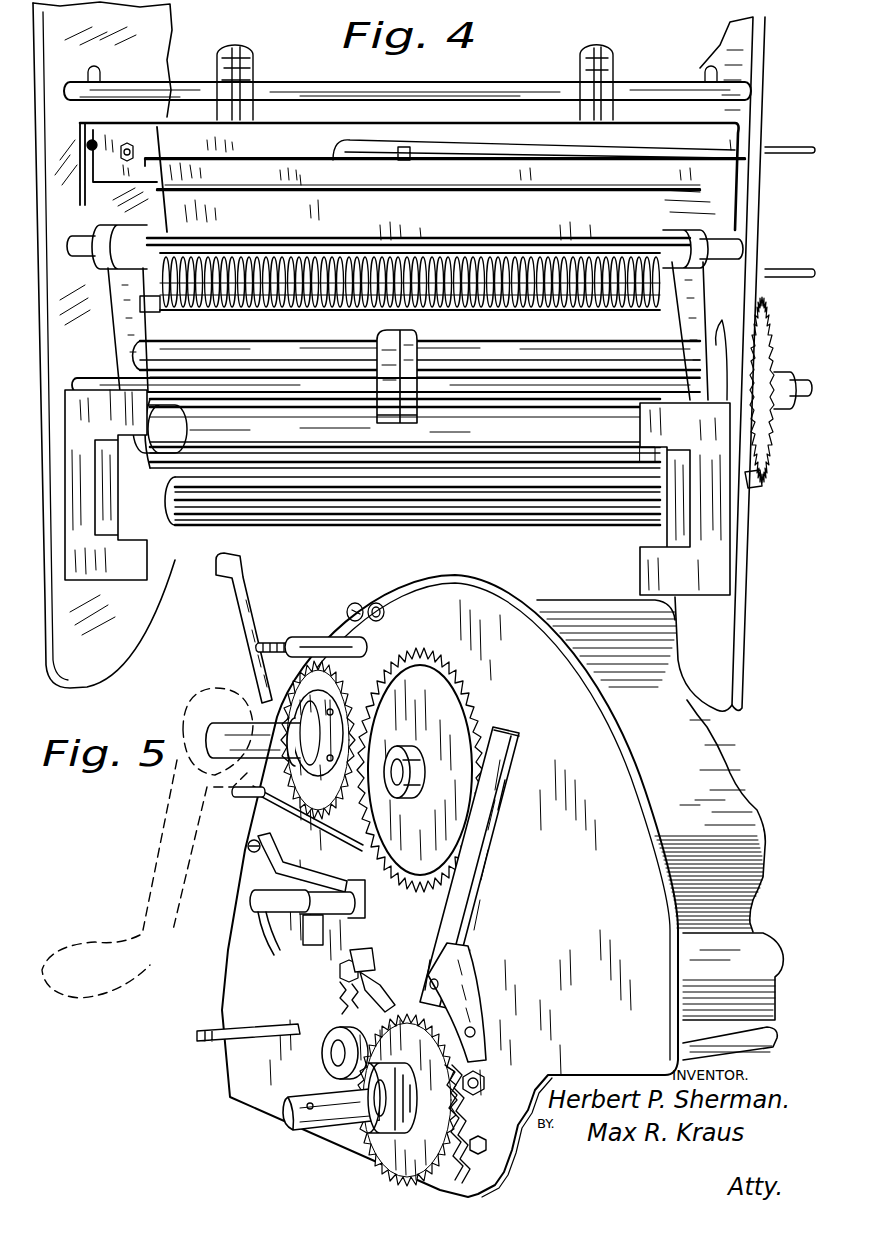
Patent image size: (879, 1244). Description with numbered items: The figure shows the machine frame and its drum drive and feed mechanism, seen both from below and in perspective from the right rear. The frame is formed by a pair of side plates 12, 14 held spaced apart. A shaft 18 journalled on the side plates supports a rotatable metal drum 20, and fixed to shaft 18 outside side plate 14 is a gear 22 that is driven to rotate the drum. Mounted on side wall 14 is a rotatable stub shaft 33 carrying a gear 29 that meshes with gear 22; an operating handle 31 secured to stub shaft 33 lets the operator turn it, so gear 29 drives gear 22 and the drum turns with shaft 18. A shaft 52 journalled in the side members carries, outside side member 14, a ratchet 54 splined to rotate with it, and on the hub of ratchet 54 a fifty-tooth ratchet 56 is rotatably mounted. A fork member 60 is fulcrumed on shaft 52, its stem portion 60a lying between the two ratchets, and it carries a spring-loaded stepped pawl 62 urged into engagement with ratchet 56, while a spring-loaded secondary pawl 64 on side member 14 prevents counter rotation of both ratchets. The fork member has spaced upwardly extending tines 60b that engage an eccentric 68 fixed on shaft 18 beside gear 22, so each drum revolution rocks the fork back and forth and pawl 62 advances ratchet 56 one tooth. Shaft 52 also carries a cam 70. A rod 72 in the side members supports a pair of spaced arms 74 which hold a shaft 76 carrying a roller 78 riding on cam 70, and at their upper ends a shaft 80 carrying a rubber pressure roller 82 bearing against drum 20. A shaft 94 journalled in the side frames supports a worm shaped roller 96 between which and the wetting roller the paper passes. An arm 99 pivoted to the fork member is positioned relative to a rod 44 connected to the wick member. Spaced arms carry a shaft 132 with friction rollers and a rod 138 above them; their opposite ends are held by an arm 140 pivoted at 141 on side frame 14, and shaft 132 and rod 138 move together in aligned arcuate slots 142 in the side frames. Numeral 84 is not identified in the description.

In FIG. 4, the side plate 12 is at (170, 22).
In FIG. 4, the side plate 14 is at (766, 52).
In FIG. 5, the shaft 18 is at (405, 775).
In FIG. 4, the metal drum 20 is at (590, 530).
In FIG. 5, the gear 22 is at (465, 697).
In FIG. 5, the gear 29 is at (333, 692).
In FIG. 5, the operating handle 31 is at (188, 705).
In FIG. 5, the stub shaft 33 is at (256, 697).
In FIG. 5, the rod 44 is at (240, 797).
In FIG. 4, the shaft 52 is at (513, 392).
In FIG. 5, the shaft 52 is at (318, 1130).
In FIG. 4, the ratchet 54 is at (758, 488).
In FIG. 5, the ratchet 54 is at (460, 1114).
In FIG. 4, the ratchet 56 is at (770, 462).
In FIG. 5, the ratchet 56 is at (410, 1155).
In FIG. 5, the fork member 60 is at (514, 912).
In FIG. 5, the stem portion 60a is at (433, 943).
In FIG. 5, the tines 60b is at (497, 823).
In FIG. 5, the stepped pawl 62 is at (483, 1012).
In FIG. 5, the secondary pawl 64 is at (372, 980).
In FIG. 5, the eccentric 68 is at (503, 725).
In FIG. 4, the cam 70 is at (420, 418).
In FIG. 4, the rod 72 is at (584, 250).
In FIG. 4, the arms 74 is at (110, 303).
In FIG. 4, the shaft 76 is at (485, 358).
In FIG. 4, the roller 78 is at (415, 332).
In FIG. 4, the shaft 80 is at (164, 433).
In FIG. 4, the pressure roller 82 is at (320, 428).
In FIG. 4, the end piece 84 is at (150, 308).
In FIG. 5, the shaft 94 is at (340, 972).
In FIG. 4, the worm roller 96 is at (292, 305).
In FIG. 5, the arm 99 is at (330, 815).
In FIG. 5, the shaft 132 is at (252, 900).
In FIG. 5, the rod 138 is at (248, 846).
In FIG. 5, the arm 140 is at (286, 892).
In FIG. 5, the pivot 141 is at (313, 943).
In FIG. 5, the arcuate slots 142 is at (258, 943).